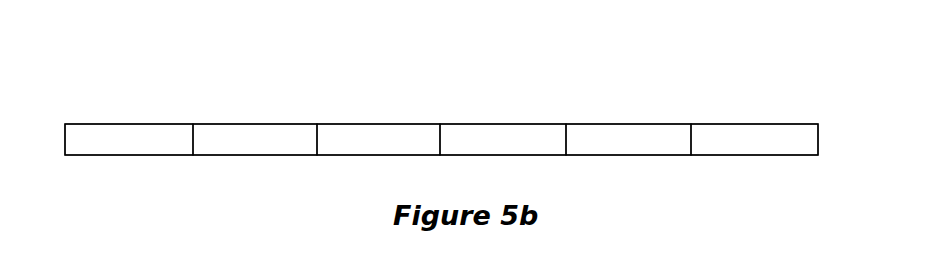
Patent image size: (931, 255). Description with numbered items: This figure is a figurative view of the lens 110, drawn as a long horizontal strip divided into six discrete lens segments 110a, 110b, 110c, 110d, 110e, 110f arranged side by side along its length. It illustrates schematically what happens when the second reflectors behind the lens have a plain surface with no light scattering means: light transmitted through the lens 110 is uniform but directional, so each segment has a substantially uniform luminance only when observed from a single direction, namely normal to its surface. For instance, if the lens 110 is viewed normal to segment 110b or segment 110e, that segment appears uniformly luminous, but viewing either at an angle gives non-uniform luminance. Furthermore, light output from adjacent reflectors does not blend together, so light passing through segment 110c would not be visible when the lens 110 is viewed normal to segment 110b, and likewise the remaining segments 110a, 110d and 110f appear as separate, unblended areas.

The lens 110 is at (74, 102).
The lens segment 110a is at (133, 135).
The lens segment 110b is at (256, 135).
The lens segment 110c is at (381, 135).
The lens segment 110d is at (504, 135).
The lens segment 110e is at (631, 135).
The lens segment 110f is at (753, 135).